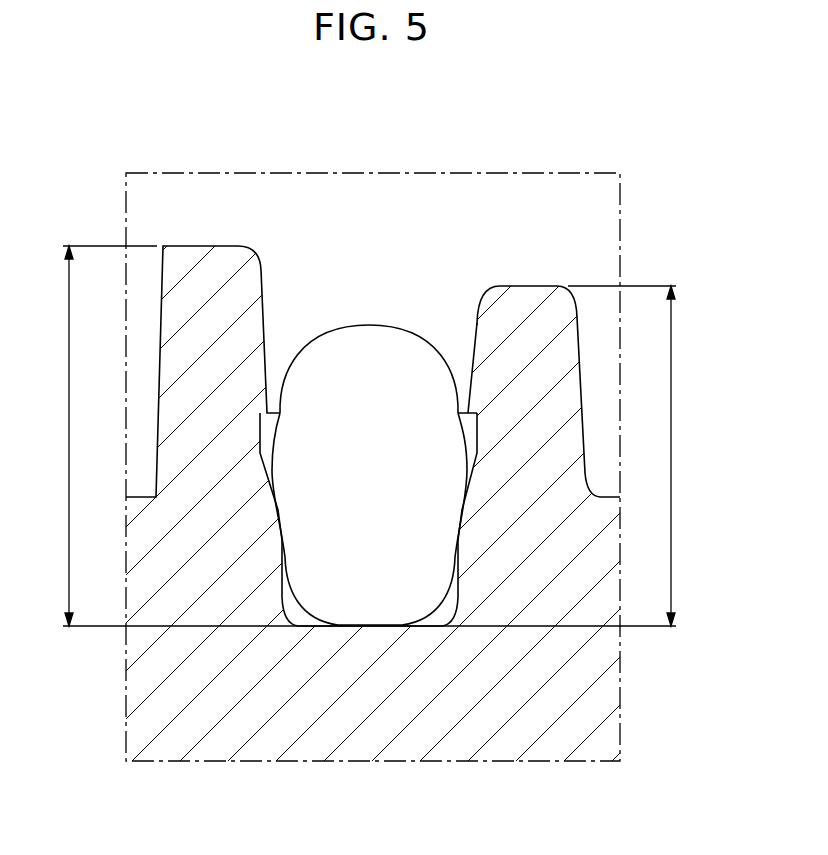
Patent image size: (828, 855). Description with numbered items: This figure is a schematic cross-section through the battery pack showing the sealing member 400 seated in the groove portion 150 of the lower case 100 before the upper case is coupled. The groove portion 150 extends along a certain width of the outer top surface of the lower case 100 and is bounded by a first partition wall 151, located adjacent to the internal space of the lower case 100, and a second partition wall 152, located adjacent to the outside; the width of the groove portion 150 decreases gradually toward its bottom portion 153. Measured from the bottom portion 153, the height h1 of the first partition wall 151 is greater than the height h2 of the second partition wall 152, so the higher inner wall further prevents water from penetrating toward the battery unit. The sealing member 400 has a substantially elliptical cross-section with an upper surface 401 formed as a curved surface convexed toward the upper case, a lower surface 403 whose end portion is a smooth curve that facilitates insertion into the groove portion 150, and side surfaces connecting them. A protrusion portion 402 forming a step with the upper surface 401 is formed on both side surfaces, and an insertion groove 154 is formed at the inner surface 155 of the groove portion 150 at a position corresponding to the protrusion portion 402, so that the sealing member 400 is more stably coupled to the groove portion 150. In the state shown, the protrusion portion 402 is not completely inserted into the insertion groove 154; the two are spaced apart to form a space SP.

The lower case 100 is at (533, 732).
The groove portion 150 is at (408, 505).
The first partition wall 151 is at (207, 252).
The second partition wall 152 is at (528, 291).
The bottom portion 153 is at (333, 626).
The insertion groove 154 is at (467, 497).
The inner surface 155 is at (475, 327).
The sealing member 400 is at (382, 545).
The upper surface 401 is at (369, 325).
The protrusion portion 402 is at (470, 440).
The lower surface 403 is at (448, 588).
The space SP is at (266, 463).
The height of the first partition wall h1 is at (99, 436).
The height of the second partition wall h2 is at (635, 456).